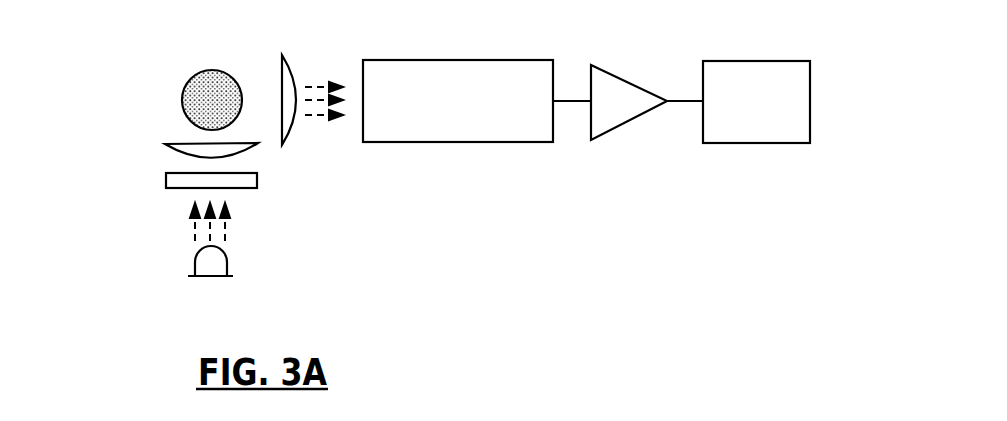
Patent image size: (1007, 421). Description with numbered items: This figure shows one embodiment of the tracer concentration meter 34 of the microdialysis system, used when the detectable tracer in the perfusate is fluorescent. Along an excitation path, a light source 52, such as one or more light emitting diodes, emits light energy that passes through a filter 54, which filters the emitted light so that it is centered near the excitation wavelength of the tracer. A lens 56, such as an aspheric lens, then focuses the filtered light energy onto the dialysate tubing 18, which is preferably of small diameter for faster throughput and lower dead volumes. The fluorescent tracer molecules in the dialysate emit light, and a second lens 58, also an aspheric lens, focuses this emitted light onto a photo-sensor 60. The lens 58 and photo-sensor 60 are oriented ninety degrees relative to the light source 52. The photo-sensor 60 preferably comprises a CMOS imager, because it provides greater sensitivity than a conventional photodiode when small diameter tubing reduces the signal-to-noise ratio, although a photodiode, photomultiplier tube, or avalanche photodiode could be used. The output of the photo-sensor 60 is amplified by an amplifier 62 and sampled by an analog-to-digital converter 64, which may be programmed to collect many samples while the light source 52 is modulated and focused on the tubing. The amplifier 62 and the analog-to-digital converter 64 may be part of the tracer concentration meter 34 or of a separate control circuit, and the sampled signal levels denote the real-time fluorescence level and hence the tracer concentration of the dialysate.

The dialysate tubing 18 is at (172, 92).
The tracer concentration meter 34 is at (647, 250).
The light source 52 is at (167, 267).
The filter 54 is at (165, 194).
The lens 56 is at (170, 137).
The lens 58 is at (330, 75).
The photo-sensor 60 is at (458, 80).
The amplifier 62 is at (640, 85).
The analog-to-digital converter 64 is at (771, 125).